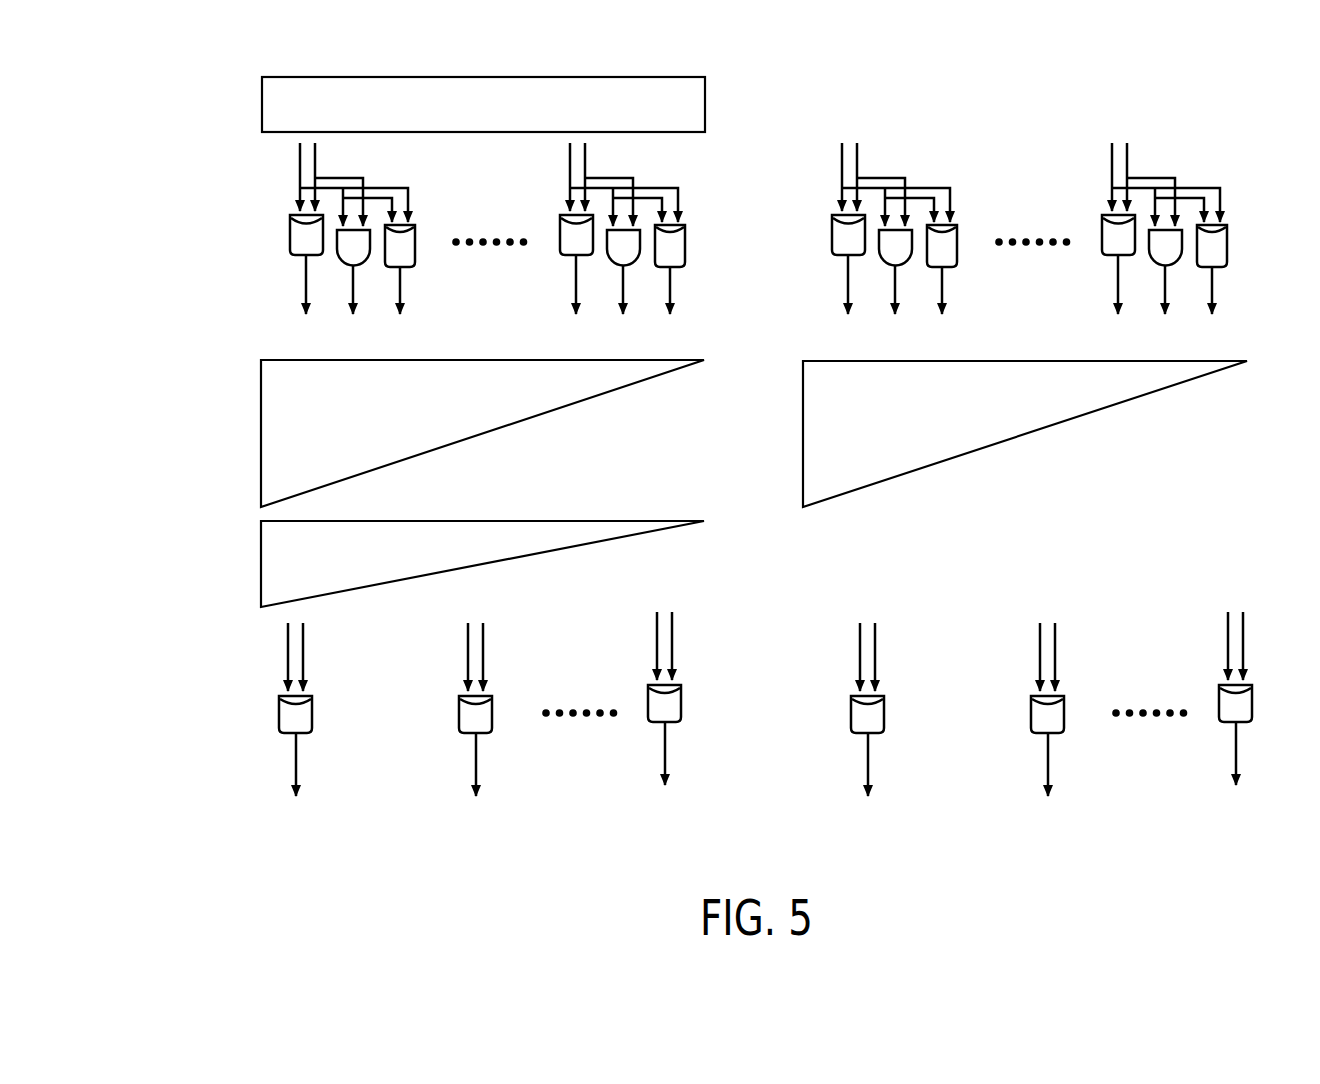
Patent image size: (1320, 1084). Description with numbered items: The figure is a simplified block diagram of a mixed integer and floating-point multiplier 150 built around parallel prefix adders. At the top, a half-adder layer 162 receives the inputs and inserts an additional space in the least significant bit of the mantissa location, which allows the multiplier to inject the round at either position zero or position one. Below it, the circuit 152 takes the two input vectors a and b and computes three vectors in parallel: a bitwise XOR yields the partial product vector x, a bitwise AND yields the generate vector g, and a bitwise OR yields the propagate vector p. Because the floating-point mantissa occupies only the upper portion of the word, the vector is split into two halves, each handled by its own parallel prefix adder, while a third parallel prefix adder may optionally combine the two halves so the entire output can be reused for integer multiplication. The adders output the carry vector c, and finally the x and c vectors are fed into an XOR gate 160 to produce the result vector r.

The mixed integer and floating-point multiplier 150 is at (202, 99).
The circuit 152 is at (206, 255).
The XOR gate 160 is at (194, 733).
The half-adder layer 162 is at (461, 119).